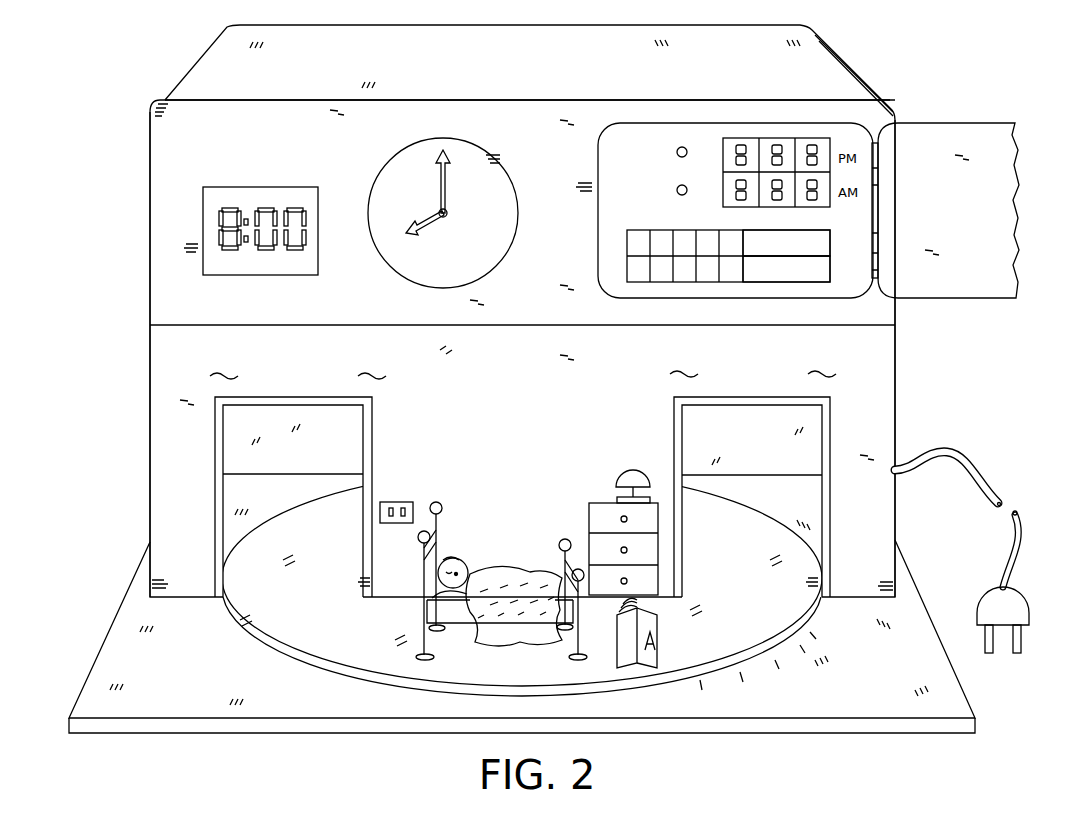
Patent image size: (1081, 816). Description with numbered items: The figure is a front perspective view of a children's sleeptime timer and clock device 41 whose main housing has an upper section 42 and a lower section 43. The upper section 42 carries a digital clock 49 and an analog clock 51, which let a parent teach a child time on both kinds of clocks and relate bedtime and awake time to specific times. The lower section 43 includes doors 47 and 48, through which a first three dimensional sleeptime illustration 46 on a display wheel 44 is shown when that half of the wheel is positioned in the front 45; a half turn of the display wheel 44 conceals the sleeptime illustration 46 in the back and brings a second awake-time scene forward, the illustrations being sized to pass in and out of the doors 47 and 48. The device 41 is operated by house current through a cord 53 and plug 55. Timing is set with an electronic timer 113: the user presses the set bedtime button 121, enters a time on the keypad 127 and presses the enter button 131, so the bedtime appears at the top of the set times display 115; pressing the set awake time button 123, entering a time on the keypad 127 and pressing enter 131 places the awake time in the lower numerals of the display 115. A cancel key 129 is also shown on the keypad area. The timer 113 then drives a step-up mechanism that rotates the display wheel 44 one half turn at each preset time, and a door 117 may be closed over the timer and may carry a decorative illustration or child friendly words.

The device 41 is at (108, 240).
The upper section 42 is at (160, 208).
The lower section 43 is at (160, 465).
The display wheel 44 is at (263, 628).
The front 45 is at (98, 672).
The first illustration 46 is at (500, 572).
The door 47 is at (375, 438).
The door 48 is at (673, 436).
The digital clock 49 is at (226, 187).
The analog clock 51 is at (393, 258).
The cord 53 is at (980, 468).
The plug 55 is at (1027, 607).
The timer 113 is at (658, 127).
The set times display 115 is at (763, 138).
The door 117 is at (962, 296).
The set bedtime button 121 is at (688, 148).
The set awake time button 123 is at (687, 189).
The keypad 127 is at (627, 245).
The cancel key 129 is at (825, 232).
The enter button 131 is at (822, 284).